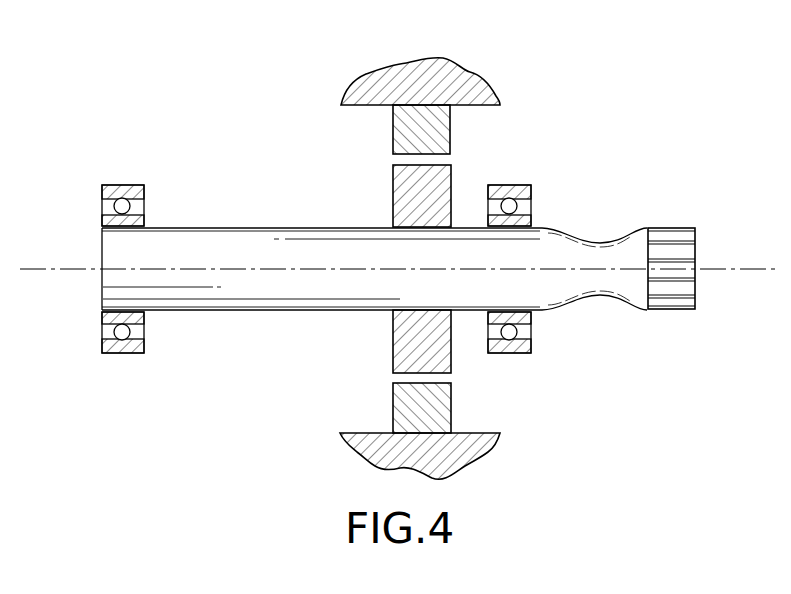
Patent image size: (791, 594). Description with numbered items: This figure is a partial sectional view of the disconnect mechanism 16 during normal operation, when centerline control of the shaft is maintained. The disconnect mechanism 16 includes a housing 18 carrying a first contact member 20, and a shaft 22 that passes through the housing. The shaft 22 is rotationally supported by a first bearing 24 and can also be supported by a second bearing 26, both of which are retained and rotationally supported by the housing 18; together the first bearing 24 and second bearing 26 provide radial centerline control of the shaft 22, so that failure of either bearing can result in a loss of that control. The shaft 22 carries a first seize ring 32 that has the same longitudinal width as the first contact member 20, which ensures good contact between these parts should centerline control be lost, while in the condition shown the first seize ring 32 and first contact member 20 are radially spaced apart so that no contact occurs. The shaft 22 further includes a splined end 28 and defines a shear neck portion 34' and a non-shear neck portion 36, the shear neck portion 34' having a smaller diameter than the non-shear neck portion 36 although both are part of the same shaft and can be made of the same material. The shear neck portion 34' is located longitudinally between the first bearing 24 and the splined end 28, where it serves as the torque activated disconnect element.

The disconnect mechanism 16 is at (131, 95).
The housing 18 is at (446, 68).
The first contact member 20 is at (392, 403).
The shaft 22 is at (200, 303).
The first bearing 24 is at (120, 184).
The second bearing 26 is at (517, 182).
The splined end 28 is at (681, 227).
The first seize ring 32 is at (392, 180).
The shear neck portion 34' is at (597, 227).
The non-shear neck portion 36 is at (259, 198).